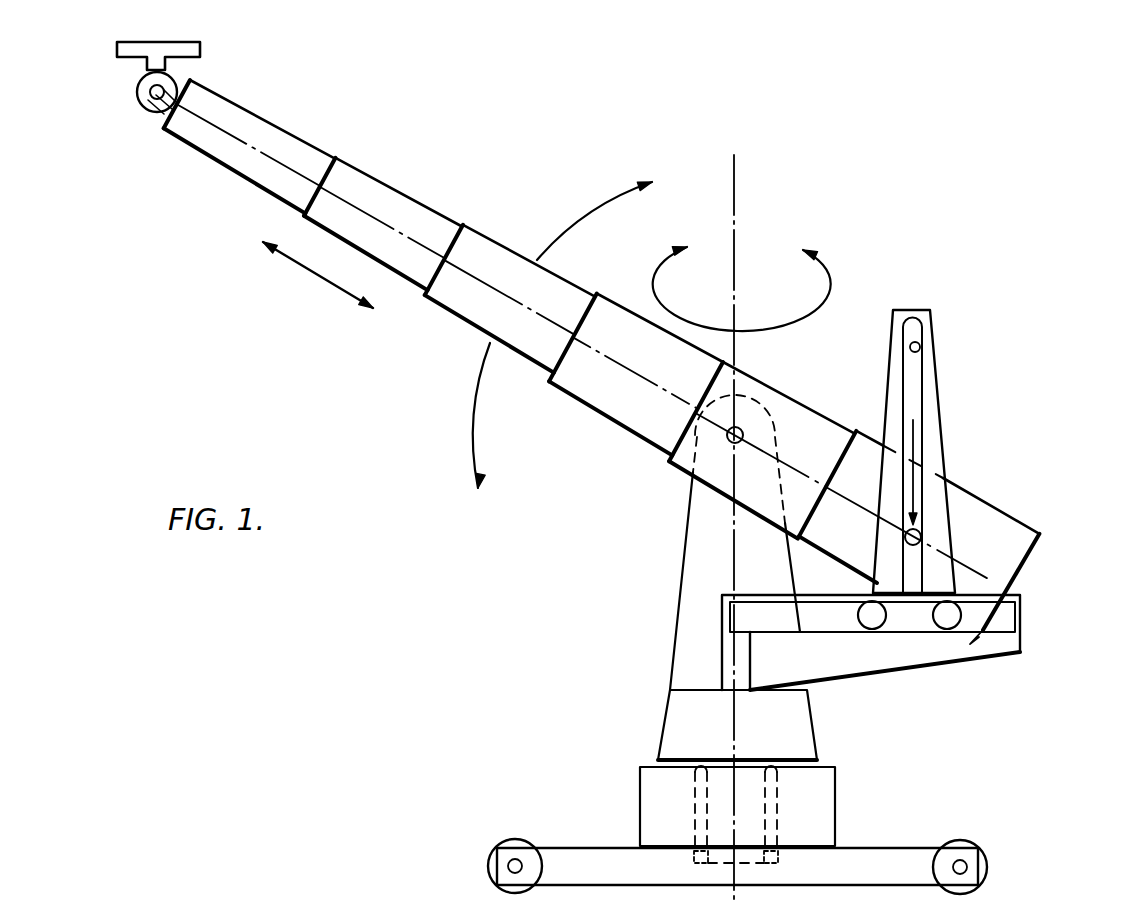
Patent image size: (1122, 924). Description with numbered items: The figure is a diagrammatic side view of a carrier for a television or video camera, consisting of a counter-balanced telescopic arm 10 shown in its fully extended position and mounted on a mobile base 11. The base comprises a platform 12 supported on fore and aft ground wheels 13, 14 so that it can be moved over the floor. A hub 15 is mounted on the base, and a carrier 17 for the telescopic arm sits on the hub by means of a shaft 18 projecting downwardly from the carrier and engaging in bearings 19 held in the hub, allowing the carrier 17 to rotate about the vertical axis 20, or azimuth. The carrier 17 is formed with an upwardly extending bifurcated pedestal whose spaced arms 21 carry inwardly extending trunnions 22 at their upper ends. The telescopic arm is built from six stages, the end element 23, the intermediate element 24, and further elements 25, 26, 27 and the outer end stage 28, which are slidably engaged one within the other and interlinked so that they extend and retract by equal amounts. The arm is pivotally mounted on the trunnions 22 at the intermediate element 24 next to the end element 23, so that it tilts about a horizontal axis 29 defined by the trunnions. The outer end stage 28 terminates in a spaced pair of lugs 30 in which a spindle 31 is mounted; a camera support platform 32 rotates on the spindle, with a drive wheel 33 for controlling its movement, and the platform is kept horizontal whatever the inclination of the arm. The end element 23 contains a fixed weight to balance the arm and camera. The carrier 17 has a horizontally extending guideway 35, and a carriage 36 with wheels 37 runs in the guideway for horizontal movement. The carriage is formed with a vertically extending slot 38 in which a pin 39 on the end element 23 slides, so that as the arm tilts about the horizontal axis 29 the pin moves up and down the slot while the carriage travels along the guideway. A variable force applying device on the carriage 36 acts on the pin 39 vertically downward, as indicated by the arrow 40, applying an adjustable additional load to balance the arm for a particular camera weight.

The counter-balanced telescopic arm 10 is at (200, 218).
The mobile base 11 is at (527, 760).
The platform 12 is at (907, 852).
The ground wheel 13 is at (512, 840).
The ground wheel 14 is at (988, 853).
The hub 15 is at (640, 790).
The carrier 17 is at (795, 738).
The shaft 18 is at (750, 837).
The bearings 19 is at (788, 848).
The vertical axis 20 is at (740, 180).
The spaced arms 21 is at (682, 627).
The trunnions 22 is at (727, 432).
The end element 23 is at (998, 515).
The intermediate element 24 is at (797, 400).
The element 25 is at (608, 303).
The element 26 is at (480, 245).
The element 27 is at (387, 198).
The outer end stage 28 is at (257, 128).
The horizontal axis 29 is at (725, 448).
The lugs 30 is at (144, 107).
The spindle 31 is at (150, 91).
The camera support platform 32 is at (147, 66).
The drive wheel 33 is at (170, 75).
The guideway 35 is at (953, 653).
The carriage 36 is at (945, 448).
The wheels 37 is at (950, 617).
The slot 38 is at (921, 347).
The pin 39 is at (921, 538).
The arrow 40 is at (915, 432).